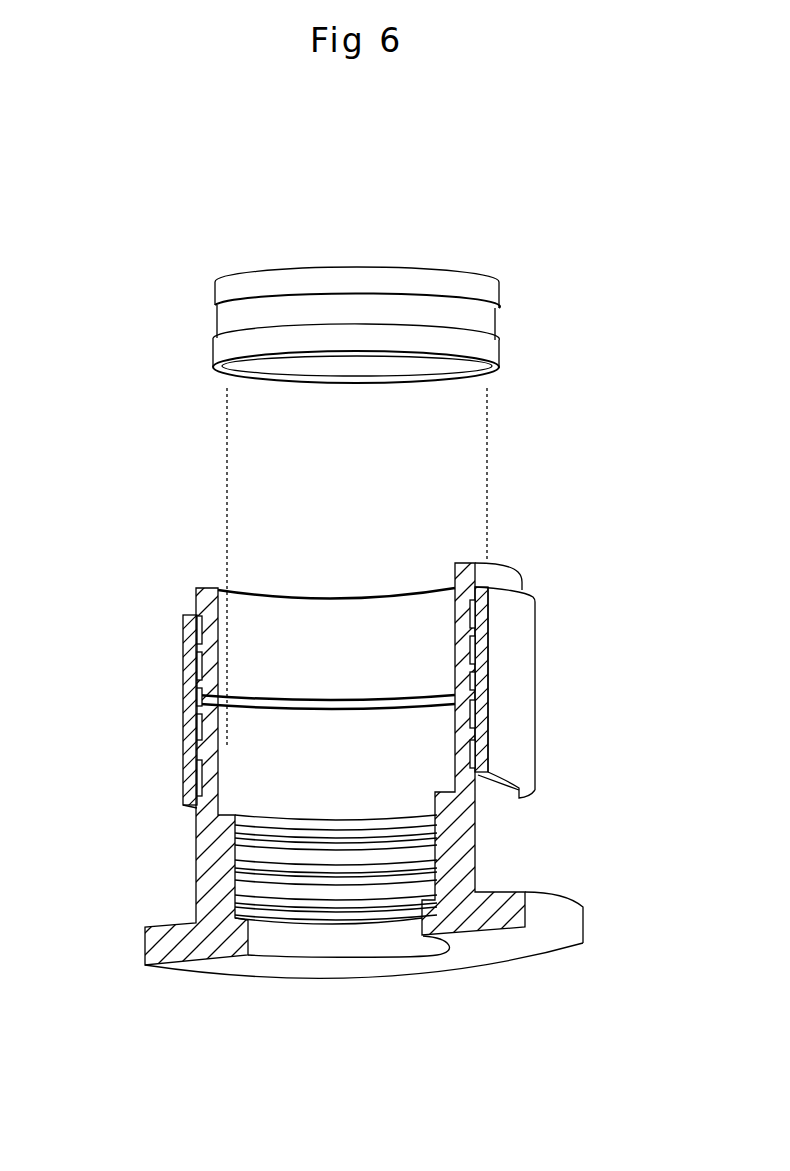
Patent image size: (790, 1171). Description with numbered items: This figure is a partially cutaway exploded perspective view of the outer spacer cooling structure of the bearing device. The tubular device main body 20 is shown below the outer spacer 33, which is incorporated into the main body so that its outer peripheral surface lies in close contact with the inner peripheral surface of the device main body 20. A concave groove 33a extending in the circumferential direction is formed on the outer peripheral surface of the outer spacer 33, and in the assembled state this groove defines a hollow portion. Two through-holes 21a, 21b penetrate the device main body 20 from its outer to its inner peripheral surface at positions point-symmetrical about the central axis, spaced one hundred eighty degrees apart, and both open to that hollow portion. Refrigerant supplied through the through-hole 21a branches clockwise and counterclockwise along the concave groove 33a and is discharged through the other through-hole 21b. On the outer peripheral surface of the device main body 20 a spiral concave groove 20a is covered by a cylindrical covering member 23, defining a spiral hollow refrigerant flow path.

The device main body 20 is at (373, 770).
The concave groove 20a is at (187, 758).
The through-hole 21a is at (217, 703).
The through-hole 21b is at (473, 672).
The covering member 23 is at (182, 740).
The outer spacer 33 is at (289, 456).
The concave groove 33a is at (237, 322).